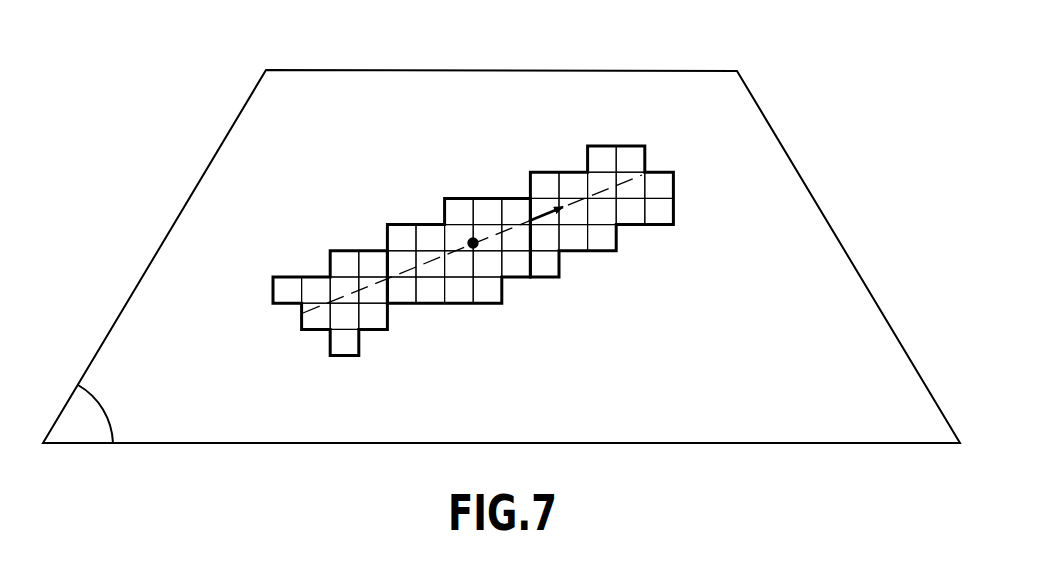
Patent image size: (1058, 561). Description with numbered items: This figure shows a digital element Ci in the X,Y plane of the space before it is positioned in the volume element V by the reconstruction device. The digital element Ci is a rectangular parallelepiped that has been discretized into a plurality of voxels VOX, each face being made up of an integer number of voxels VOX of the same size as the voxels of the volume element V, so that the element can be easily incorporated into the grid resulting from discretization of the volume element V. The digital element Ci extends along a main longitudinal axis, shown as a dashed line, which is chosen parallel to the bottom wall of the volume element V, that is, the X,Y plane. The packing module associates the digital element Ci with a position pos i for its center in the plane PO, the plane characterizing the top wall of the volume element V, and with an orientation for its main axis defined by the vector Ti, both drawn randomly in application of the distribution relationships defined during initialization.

The volume element V is at (377, 108).
The plane P0 PO is at (89, 414).
The voxels VOX is at (407, 237).
The digital element Ci is at (603, 250).
The position POSi pos i is at (481, 256).
The vector Ti is at (556, 220).